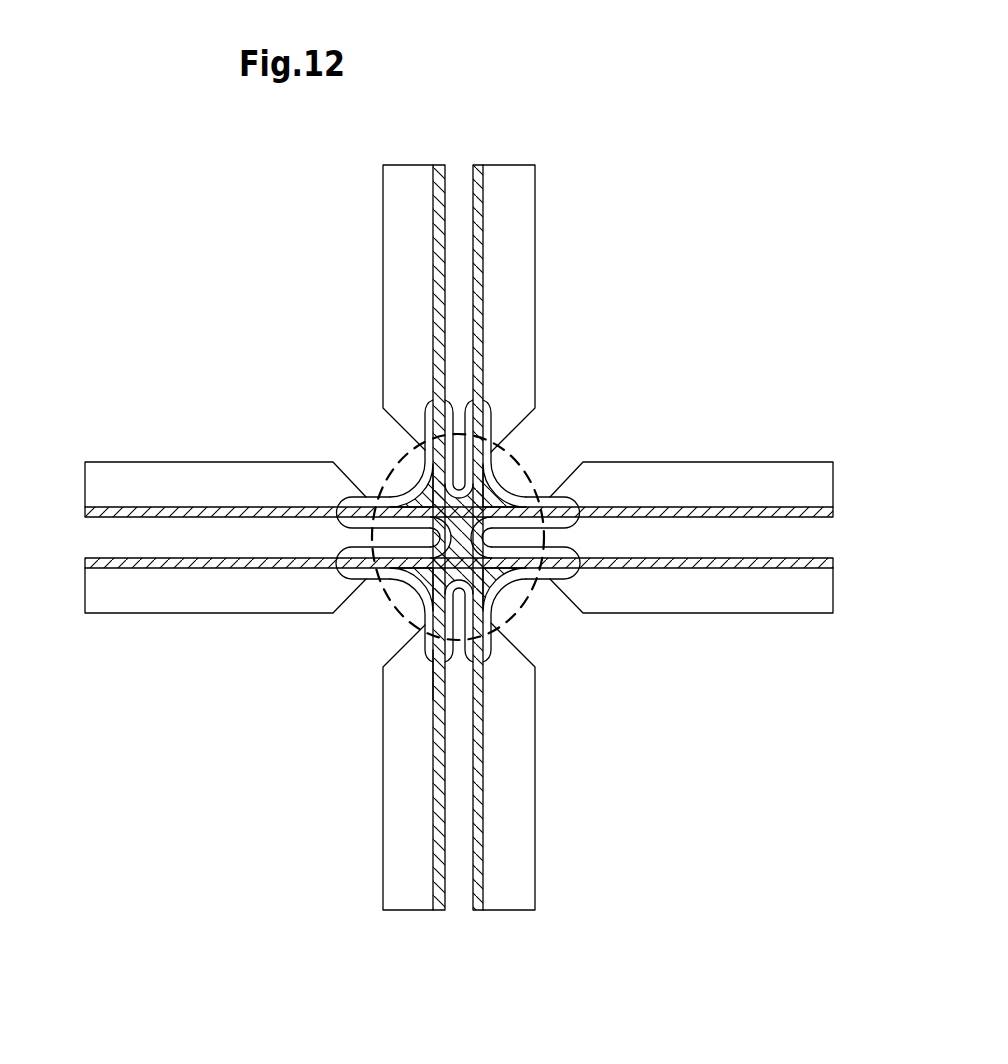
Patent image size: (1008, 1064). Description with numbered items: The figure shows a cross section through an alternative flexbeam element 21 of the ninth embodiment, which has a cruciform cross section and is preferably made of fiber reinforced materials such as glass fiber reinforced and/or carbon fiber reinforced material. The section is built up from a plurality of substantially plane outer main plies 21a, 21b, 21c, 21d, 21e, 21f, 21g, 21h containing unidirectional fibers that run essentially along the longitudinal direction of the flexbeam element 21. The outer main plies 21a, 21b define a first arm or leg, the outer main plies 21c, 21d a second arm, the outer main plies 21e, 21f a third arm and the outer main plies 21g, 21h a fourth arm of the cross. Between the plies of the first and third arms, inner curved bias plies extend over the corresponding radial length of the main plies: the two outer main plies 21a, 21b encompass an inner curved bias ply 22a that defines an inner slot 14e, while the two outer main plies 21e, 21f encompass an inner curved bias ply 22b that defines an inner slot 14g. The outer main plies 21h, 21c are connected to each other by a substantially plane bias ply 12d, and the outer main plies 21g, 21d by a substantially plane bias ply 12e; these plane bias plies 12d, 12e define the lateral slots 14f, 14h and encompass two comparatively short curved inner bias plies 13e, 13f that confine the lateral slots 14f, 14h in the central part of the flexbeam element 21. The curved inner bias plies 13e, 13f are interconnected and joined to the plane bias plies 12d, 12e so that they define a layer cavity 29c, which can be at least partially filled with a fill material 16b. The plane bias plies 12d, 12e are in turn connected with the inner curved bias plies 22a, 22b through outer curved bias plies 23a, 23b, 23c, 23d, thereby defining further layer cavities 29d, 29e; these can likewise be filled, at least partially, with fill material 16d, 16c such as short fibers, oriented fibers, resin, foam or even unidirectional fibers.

The flexbeam element 21 is at (657, 197).
The outer main ply 21a is at (396, 194).
The outer main ply 21b is at (523, 230).
The outer main ply 21c is at (760, 480).
The outer main ply 21d is at (735, 598).
The outer main ply 21e is at (520, 881).
The outer main ply 21f is at (398, 882).
The outer main ply 21g is at (140, 598).
The outer main ply 21h is at (126, 485).
The inner curved bias ply 22a is at (433, 258).
The inner curved bias ply 22b is at (483, 790).
The plane bias ply 12d is at (190, 508).
The plane bias ply 12e is at (225, 568).
The curved inner bias ply 13e is at (395, 494).
The curved inner bias ply 13f is at (582, 566).
The fill material 16b is at (520, 494).
The fill material 16c is at (424, 448).
The fill material 16d is at (425, 636).
The outer curved bias ply 23a is at (428, 480).
The outer curved bias ply 23b is at (502, 492).
The outer curved bias ply 23c is at (430, 588).
The outer curved bias ply 23d is at (514, 597).
The layer cavity 29c is at (487, 600).
The further layer cavity 29d is at (460, 478).
The further layer cavity 29e is at (437, 677).
The inner slot 14e is at (458, 190).
The lateral slot 14f is at (812, 537).
The inner slot 14g is at (458, 887).
The lateral slot 14h is at (118, 537).